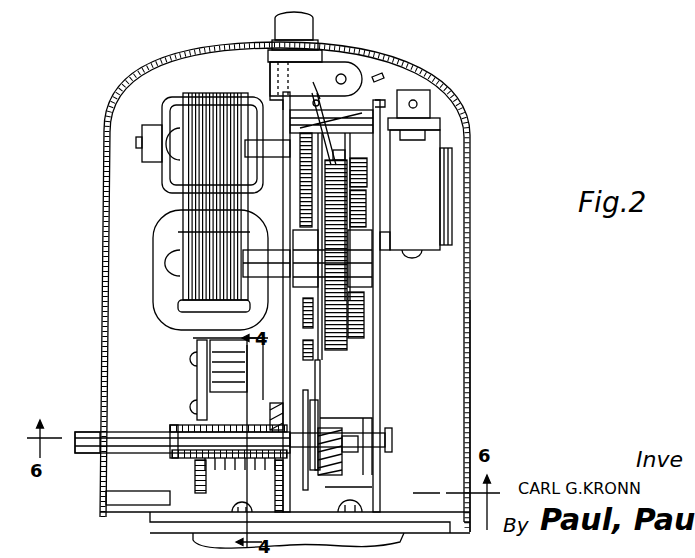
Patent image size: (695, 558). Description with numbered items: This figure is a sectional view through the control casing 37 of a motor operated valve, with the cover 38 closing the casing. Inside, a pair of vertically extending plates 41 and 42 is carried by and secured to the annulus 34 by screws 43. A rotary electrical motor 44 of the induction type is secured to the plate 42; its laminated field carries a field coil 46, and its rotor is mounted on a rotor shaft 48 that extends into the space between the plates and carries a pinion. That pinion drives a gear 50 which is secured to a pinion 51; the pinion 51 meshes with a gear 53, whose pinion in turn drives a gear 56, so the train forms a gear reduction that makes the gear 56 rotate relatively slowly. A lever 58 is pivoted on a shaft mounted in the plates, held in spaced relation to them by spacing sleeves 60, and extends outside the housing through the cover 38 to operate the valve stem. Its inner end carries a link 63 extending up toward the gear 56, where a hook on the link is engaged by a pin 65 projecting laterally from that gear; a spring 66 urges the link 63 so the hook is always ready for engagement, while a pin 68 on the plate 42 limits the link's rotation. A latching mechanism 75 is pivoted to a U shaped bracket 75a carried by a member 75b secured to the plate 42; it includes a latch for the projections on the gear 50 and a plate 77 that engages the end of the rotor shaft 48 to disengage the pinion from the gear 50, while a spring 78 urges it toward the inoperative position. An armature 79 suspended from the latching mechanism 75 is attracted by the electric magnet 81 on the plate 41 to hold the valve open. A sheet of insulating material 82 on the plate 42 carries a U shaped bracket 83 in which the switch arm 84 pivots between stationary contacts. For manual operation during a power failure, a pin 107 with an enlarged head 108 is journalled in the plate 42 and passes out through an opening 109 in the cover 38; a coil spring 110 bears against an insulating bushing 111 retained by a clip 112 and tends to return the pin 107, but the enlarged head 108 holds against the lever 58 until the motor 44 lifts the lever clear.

The annulus 34 is at (107, 512).
The control casing 37 is at (455, 379).
The cover 38 is at (476, 306).
The plate 41 is at (381, 374).
The plate 42 is at (281, 306).
The screws 43 is at (243, 505).
The rotary electrical motor 44 is at (178, 204).
The field coil 46 is at (157, 263).
The rotor shaft 48 is at (142, 148).
The gear 50 is at (300, 208).
The pinion 51 is at (372, 172).
The gear 53 is at (360, 333).
The gear 56 is at (338, 360).
The lever 58 is at (318, 392).
The spacing sleeves 60 is at (285, 418).
The link 63 is at (320, 378).
The pin 65 is at (306, 314).
The spring 66 is at (338, 470).
The pin 68 is at (302, 340).
The latching mechanism 75 is at (386, 90).
The U shaped bracket 75a is at (310, 70).
The member 75b is at (272, 44).
The plate 77 is at (345, 156).
The spring 78 is at (313, 100).
The armature 79 is at (442, 124).
The electric magnet 81 is at (452, 193).
The sheet of insulating material 82 is at (196, 370).
The U shaped bracket 83 is at (215, 338).
The switch arm 84 is at (215, 390).
The pin 107 is at (112, 462).
The enlarged head 108 is at (300, 448).
The opening 109 is at (95, 432).
The coil spring 110 is at (239, 485).
The insulating bushing 111 is at (188, 458).
The clip 112 is at (173, 427).